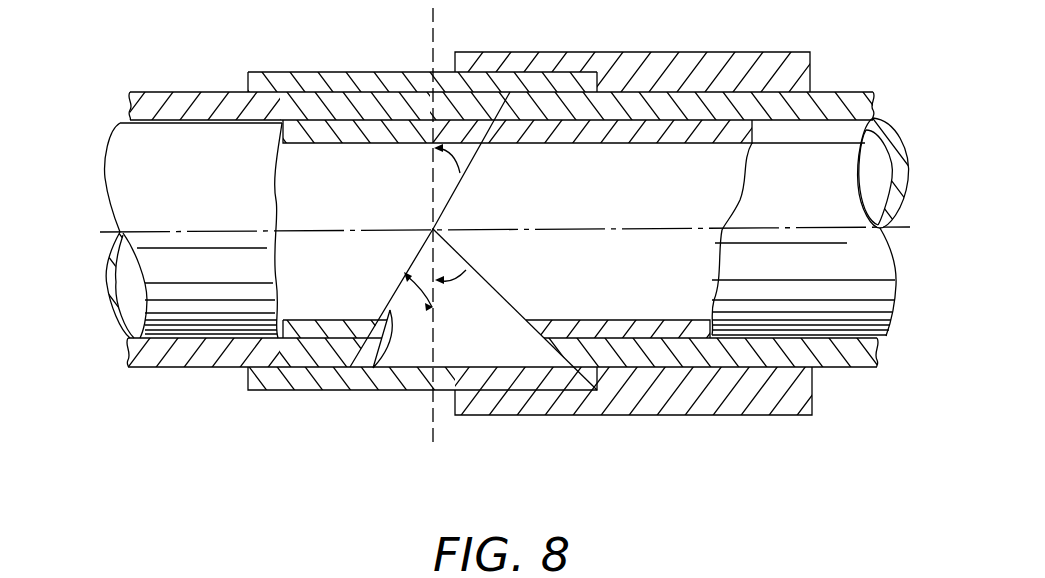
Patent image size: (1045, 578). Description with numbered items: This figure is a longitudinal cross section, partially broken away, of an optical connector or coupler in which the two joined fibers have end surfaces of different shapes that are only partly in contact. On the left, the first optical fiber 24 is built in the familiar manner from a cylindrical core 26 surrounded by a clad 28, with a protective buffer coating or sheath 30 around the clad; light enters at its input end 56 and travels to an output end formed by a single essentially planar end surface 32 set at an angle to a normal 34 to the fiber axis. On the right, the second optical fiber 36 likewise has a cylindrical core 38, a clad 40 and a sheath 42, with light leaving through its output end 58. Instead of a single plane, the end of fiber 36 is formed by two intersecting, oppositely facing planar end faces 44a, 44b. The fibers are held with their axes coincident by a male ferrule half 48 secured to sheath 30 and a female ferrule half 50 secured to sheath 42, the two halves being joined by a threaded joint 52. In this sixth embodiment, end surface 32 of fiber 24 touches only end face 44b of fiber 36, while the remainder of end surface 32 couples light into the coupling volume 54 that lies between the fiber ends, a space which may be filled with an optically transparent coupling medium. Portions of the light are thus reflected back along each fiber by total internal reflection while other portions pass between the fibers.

The first optical fiber 24 is at (188, 295).
The cylindrical core 26 is at (130, 290).
The clad 28 is at (122, 323).
The protective buffer coating or sheath 30 is at (144, 103).
The planar end surface 32 is at (373, 368).
The normal 34 is at (486, 222).
The second optical fiber 36 is at (828, 333).
The cylindrical core 38 is at (873, 192).
The clad 40 is at (893, 143).
The protective buffer coating or sheath 42 is at (852, 100).
The end face 44a is at (512, 305).
The end face 44b is at (480, 146).
The male ferrule half 48 is at (340, 80).
The female ferrule half 50 is at (715, 390).
The threaded joint 52 is at (515, 393).
The coupling volume 54 is at (490, 347).
The input end 56 is at (105, 172).
The output end 58 is at (916, 288).